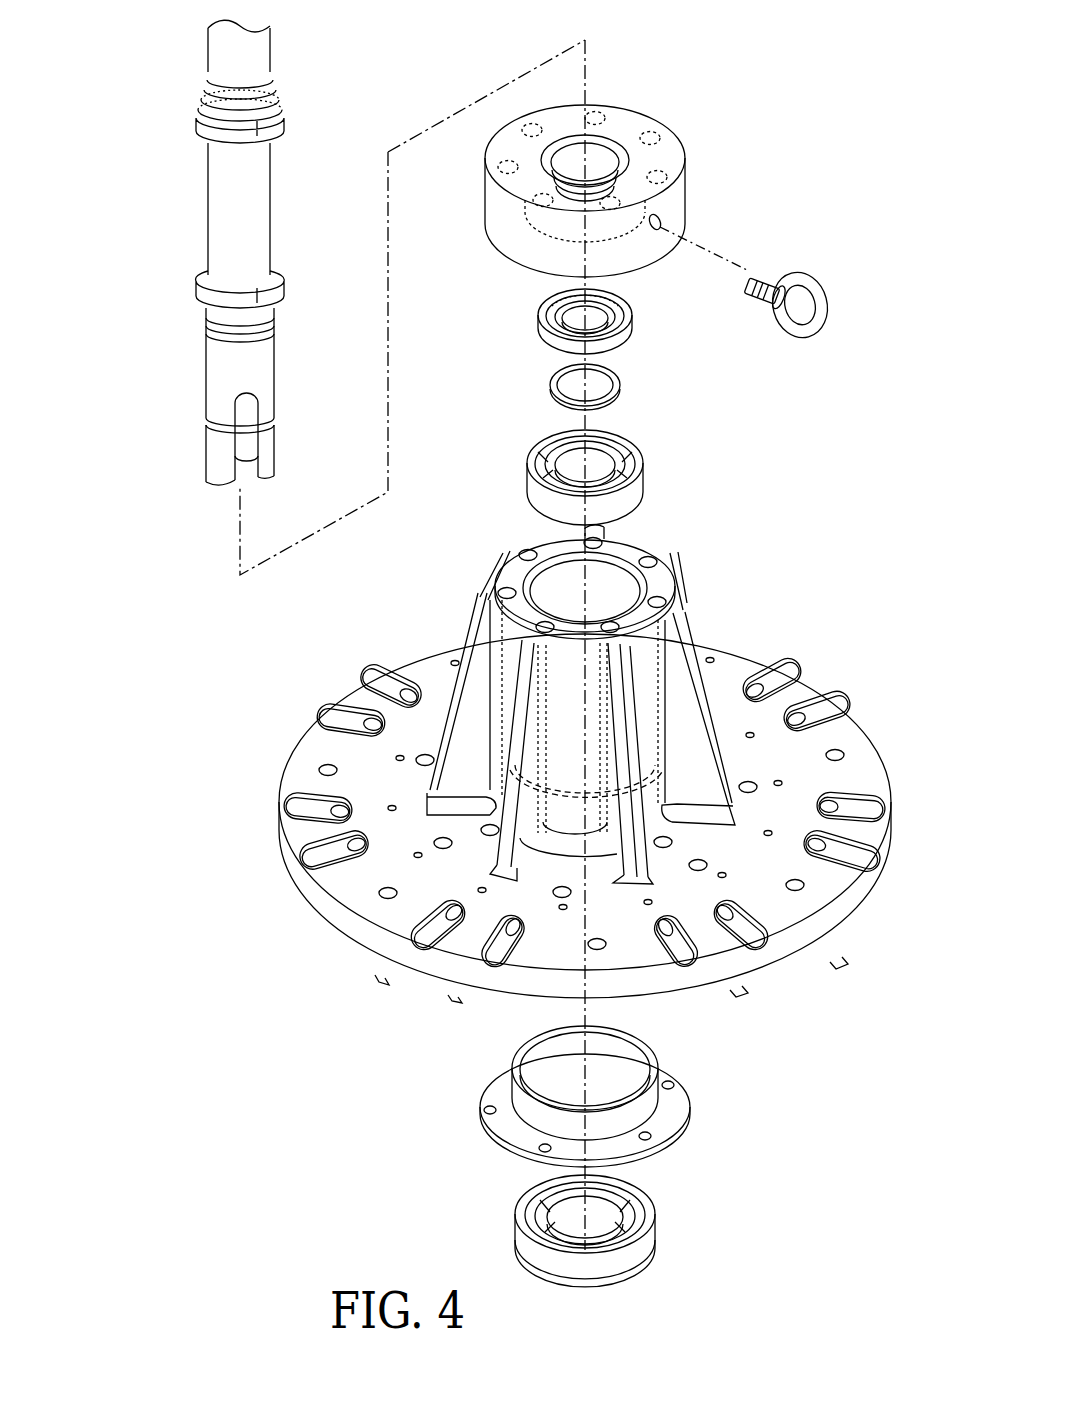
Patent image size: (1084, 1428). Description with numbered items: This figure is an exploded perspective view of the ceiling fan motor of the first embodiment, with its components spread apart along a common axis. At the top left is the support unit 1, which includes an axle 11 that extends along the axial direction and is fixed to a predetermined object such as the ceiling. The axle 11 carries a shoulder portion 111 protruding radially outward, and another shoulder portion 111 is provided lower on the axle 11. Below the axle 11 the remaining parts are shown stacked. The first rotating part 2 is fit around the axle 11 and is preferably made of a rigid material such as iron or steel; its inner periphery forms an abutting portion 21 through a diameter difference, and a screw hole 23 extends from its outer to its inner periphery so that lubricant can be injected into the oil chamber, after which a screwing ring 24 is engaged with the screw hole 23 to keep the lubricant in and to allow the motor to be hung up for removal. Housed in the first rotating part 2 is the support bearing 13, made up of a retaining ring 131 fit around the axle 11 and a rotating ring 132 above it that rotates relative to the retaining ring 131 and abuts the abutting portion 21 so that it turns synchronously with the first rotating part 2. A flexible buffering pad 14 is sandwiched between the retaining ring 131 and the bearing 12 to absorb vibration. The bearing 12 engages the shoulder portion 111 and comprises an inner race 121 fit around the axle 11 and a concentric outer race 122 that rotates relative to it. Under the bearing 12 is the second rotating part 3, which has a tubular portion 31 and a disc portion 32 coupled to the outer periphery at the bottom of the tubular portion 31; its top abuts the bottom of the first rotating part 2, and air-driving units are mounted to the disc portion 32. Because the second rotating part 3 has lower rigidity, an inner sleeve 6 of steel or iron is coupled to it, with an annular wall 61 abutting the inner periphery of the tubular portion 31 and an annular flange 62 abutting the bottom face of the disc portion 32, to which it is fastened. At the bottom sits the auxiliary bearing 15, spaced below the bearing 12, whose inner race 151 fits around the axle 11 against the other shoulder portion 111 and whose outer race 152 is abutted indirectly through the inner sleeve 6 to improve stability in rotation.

The support unit 1 is at (284, 151).
The axle 11 is at (214, 233).
The shoulder portion 111 is at (200, 103).
The first rotating part 2 is at (640, 127).
The abutting portion 21 is at (630, 185).
The screw hole 23 is at (663, 222).
The screwing ring 24 is at (808, 288).
The support bearing 13 is at (752, 338).
The retaining ring 131 is at (632, 305).
The rotating ring 132 is at (625, 338).
The buffering pad 14 is at (610, 398).
The bearing 12 is at (786, 480).
The inner race 121 is at (640, 460).
The outer race 122 is at (640, 495).
The second rotating part 3 is at (305, 588).
The tubular portion 31 is at (510, 656).
The disc portion 32 is at (338, 745).
The inner sleeve 6 is at (786, 1020).
The annular wall 61 is at (648, 1108).
The annular flange 62 is at (672, 1116).
The auxiliary bearing 15 is at (786, 1150).
The inner race 151 is at (622, 1208).
The outer race 152 is at (645, 1248).